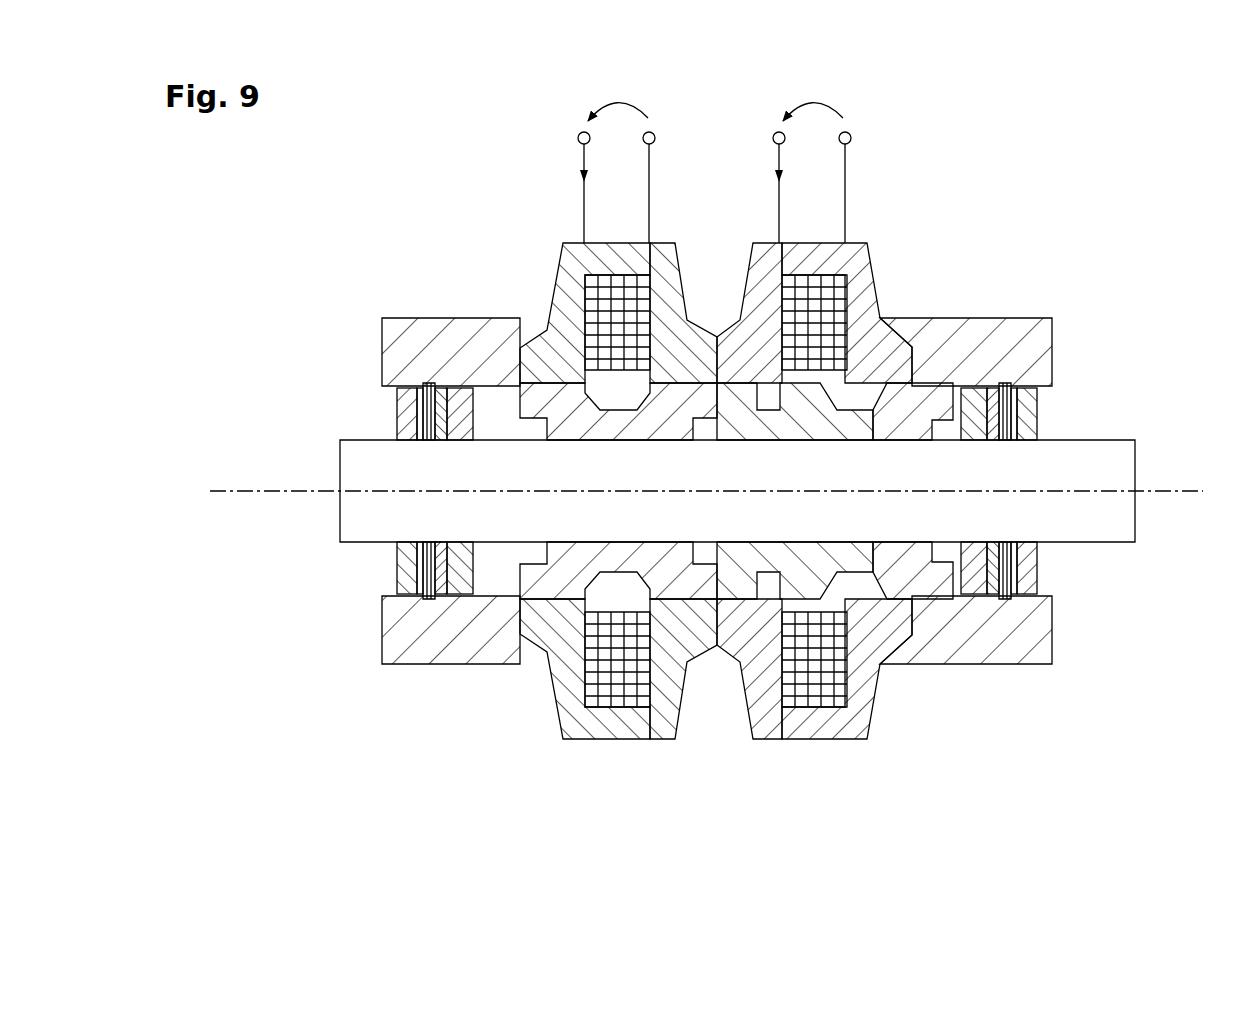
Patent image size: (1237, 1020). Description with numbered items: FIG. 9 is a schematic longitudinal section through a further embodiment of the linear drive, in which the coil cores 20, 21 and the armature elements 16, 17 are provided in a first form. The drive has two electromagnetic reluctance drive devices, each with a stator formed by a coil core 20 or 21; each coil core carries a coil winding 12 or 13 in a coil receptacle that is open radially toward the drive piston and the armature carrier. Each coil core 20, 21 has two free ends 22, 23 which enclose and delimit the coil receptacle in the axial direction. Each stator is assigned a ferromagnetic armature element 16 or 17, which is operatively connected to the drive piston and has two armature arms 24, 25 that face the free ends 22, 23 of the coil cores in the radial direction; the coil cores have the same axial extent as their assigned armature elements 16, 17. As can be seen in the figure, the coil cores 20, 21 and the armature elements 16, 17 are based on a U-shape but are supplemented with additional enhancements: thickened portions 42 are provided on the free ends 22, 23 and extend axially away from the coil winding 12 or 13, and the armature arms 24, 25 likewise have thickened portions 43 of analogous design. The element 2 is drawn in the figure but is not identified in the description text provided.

The shaft 2 is at (1182, 491).
The coil winding 12 is at (617, 295).
The coil winding 13 is at (812, 298).
The armature element 16 is at (587, 453).
The armature element 17 is at (883, 455).
The coil core 20 is at (540, 230).
The coil core 21 is at (896, 232).
The free end 22 is at (562, 345).
The free end 23 is at (679, 308).
The armature arm 24 is at (590, 420).
The armature arm 25 is at (675, 417).
The thickened portion 42 is at (729, 343).
The thickened portion 43 is at (522, 410).